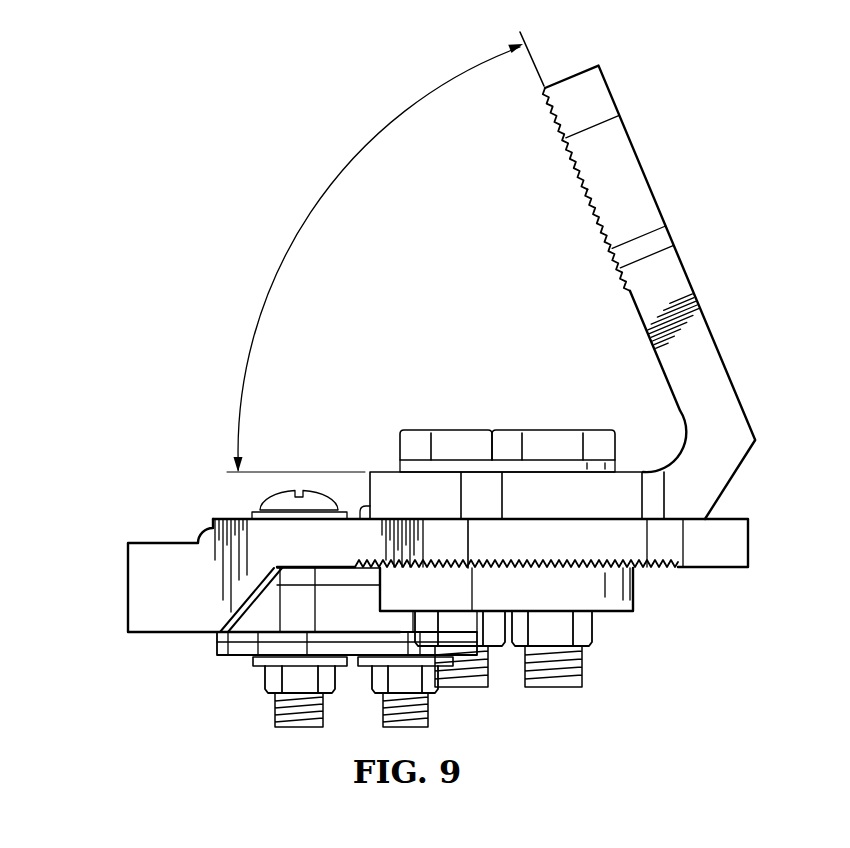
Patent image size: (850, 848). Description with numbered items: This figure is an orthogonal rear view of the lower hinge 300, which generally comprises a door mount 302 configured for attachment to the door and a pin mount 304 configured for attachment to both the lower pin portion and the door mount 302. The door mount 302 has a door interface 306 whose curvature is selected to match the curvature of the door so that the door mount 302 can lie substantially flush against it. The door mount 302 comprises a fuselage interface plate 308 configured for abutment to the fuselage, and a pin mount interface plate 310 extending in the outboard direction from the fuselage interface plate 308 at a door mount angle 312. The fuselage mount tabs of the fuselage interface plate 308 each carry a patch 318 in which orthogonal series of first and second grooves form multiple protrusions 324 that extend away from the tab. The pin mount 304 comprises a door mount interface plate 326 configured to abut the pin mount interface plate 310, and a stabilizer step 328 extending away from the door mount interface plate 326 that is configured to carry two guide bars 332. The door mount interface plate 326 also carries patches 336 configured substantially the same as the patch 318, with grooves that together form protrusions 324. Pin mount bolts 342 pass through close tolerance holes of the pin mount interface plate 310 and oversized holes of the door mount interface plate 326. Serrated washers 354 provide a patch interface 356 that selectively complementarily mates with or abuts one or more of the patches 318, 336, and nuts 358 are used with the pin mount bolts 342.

The lower hinge 300 is at (290, 124).
The door mount 302 is at (745, 398).
The pin mount 304 is at (748, 548).
The door interface 306 is at (712, 333).
The fuselage interface plate 308 is at (680, 260).
The pin mount interface plate 310 is at (630, 488).
The door mount angle 312 is at (297, 247).
The patch 318 is at (568, 147).
The protrusions 324 is at (583, 187).
The door mount interface plate 326 is at (740, 537).
The stabilizer step 328 is at (128, 582).
The guide bars 332 is at (235, 647).
The patches 336 is at (368, 568).
The pin mount bolts 342 is at (462, 429).
The serrated washers 354 is at (633, 587).
The patch interface 356 is at (455, 557).
The nuts 358 is at (497, 648).